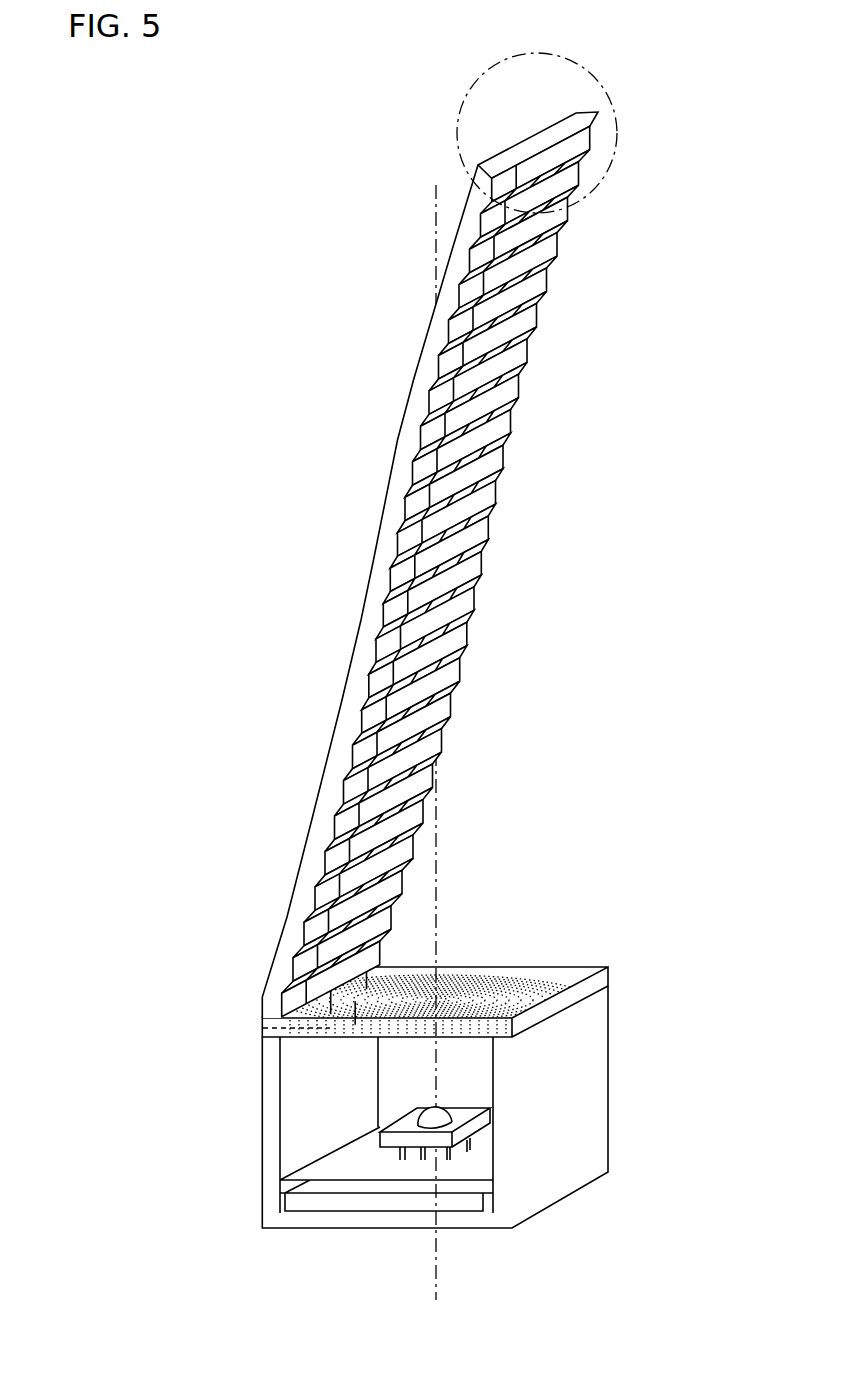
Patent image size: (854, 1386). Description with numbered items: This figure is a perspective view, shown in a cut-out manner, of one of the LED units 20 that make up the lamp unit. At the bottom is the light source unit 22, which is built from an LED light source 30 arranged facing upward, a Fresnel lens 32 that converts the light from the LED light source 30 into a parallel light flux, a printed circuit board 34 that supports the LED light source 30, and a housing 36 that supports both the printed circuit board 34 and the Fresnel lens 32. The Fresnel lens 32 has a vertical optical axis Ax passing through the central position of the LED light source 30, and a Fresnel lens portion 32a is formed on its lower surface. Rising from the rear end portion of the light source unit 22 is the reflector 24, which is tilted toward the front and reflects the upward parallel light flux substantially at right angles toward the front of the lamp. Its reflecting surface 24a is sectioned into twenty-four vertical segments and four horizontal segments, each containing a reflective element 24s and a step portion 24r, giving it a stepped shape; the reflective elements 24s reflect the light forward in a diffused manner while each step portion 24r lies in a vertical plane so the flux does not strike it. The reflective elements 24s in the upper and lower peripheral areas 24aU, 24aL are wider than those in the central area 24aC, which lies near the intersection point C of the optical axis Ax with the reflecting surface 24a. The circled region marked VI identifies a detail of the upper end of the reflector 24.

The LED unit 20 is at (398, 670).
The light source unit 22 is at (395, 1065).
The reflector 24 is at (465, 568).
The reflecting surface 24a is at (455, 510).
The upper peripheral area 24aU is at (508, 304).
The central area 24aC is at (428, 660).
The lower peripheral area 24aL is at (363, 900).
The reflective element 24s is at (518, 412).
The step portion 24r is at (522, 430).
The intersection point C is at (450, 566).
The optical axis Ax is at (440, 832).
The LED light source 30 is at (428, 1102).
The Fresnel lens 32 is at (420, 975).
The Fresnel lens portion 32a is at (323, 1042).
The printed circuit board 34 is at (330, 1167).
The housing 36 is at (575, 1108).
The detail view VI indicator circle VI is at (460, 107).